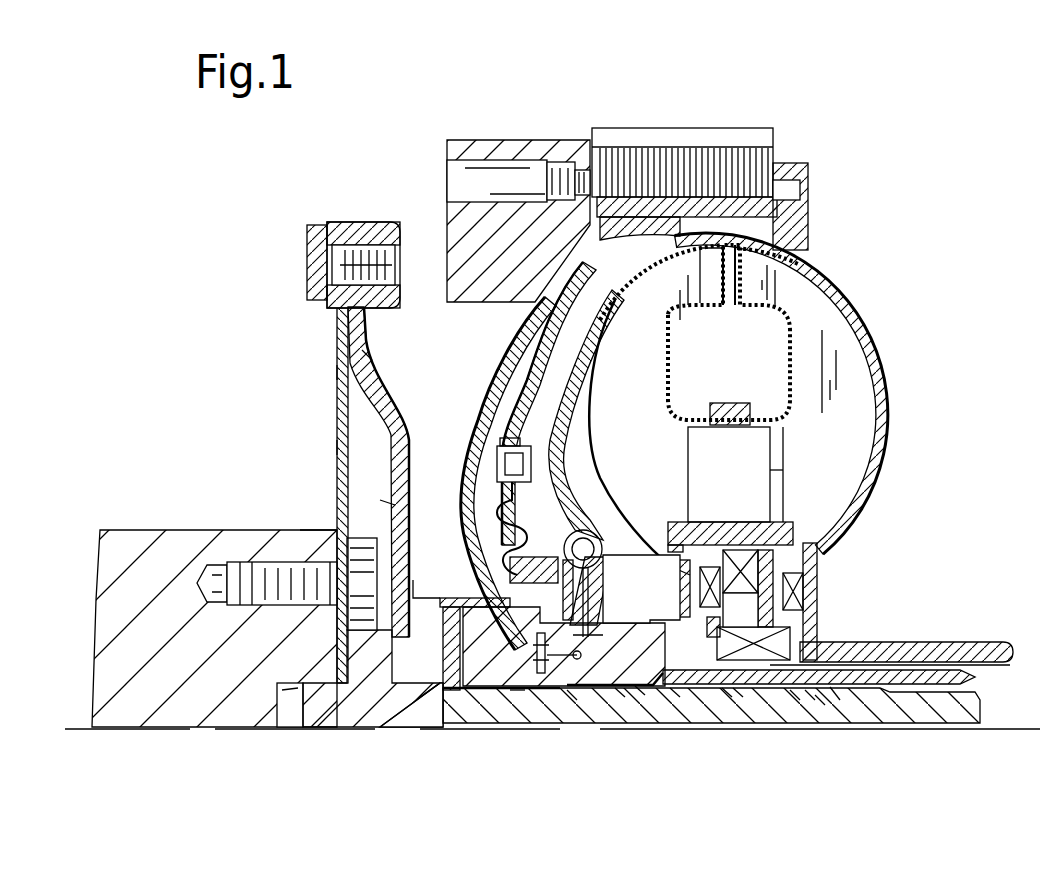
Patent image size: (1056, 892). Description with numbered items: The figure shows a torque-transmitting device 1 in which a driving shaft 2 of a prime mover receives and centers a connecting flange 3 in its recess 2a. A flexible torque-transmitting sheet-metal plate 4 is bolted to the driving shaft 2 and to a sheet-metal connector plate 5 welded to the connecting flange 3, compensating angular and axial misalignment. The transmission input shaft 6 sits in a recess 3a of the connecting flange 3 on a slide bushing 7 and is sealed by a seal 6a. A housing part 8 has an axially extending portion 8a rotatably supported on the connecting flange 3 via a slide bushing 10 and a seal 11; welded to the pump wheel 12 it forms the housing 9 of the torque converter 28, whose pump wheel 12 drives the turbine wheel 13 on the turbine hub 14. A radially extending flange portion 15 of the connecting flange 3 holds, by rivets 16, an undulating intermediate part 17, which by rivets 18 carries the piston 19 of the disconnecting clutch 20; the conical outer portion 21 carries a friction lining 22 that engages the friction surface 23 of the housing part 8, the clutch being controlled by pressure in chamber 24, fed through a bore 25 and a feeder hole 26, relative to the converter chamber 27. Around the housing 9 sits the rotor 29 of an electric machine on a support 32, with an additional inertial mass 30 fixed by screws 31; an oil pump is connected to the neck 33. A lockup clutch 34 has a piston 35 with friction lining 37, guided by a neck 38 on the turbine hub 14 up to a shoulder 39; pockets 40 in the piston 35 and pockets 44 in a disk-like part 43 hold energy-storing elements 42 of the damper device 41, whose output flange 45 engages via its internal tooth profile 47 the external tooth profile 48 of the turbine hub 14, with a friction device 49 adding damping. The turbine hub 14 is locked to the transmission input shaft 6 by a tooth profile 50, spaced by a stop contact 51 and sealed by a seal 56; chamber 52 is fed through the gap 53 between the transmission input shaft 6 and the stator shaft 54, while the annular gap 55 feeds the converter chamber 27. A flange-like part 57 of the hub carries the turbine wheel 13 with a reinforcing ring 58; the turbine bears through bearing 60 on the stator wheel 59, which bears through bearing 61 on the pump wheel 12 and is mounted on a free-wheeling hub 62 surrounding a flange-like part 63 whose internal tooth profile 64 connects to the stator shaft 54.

The torque-transmitting device 1 is at (957, 76).
The driving shaft 2 is at (133, 560).
The recess of the driving shaft 2a is at (200, 728).
The connecting flange 3 is at (377, 713).
The recess of the connecting flange 3a is at (443, 700).
The flexible torque-transmitting sheet-metal plate 4 is at (337, 393).
The sheet-metal connector plate 5 is at (337, 447).
The transmission input shaft 6 is at (573, 697).
The seal 6a is at (448, 693).
The slide bushing 7 is at (463, 700).
The housing part 8 is at (337, 295).
The axially extending portion 8a is at (337, 537).
The housing 9 is at (845, 270).
The slide bushing 10 is at (333, 697).
The seal 11 is at (290, 713).
The pump wheel 12 is at (840, 343).
The turbine wheel 13 is at (767, 237).
The turbine hub 14 is at (675, 692).
The radially extending flange portion 15 is at (490, 693).
The rivets 16 is at (407, 560).
The ring-shaped intermediate part 17 is at (388, 503).
The rivets 18 is at (337, 373).
The piston 19 is at (370, 355).
The disconnecting clutch 20 is at (485, 467).
The radially outer portion of the piston 21 is at (555, 290).
The friction lining 22 is at (337, 250).
The friction surface 23 is at (523, 293).
The chamber 24 is at (407, 450).
The bore 25 is at (795, 695).
The feeder hole 26 is at (410, 700).
The converter chamber 27 is at (652, 245).
The torque converter 28 is at (825, 242).
The rotor 29 is at (735, 165).
The additional inertial mass 30 is at (498, 220).
The screws 31 is at (565, 190).
The support 32 is at (783, 200).
The neck of the converter 33 is at (890, 648).
The lockup clutch 34 is at (486, 418).
The piston 35 is at (568, 360).
The friction lining 37 is at (622, 253).
The axially formed neck 38 is at (620, 693).
The radially stepped-up shoulder 39 is at (727, 692).
The pockets 40 is at (622, 568).
The damper device 41 is at (650, 560).
The energy-storing elements 42 is at (605, 555).
The ring-shaped disk-like part 43 is at (500, 470).
The pockets 44 is at (507, 547).
The flange 45 is at (563, 695).
The internal tooth profile 47 is at (580, 707).
The external tooth profile 48 is at (553, 680).
The friction device 49 is at (603, 588).
The tooth profile 50 is at (640, 690).
The stop contact 51 is at (517, 695).
The chamber 52 is at (530, 422).
The gap 53 is at (927, 700).
The stator shaft 54 is at (892, 727).
The annular gap 55 is at (950, 670).
The seal 56 is at (738, 692).
The flange-like part 57 is at (723, 572).
The reinforcing ring 58 is at (687, 520).
The stator wheel 59 is at (738, 503).
The bearing 60 is at (812, 695).
The bearing 61 is at (787, 583).
The free-wheeling hub 62 is at (750, 612).
The flange-like part 63 is at (833, 693).
The internal tooth profile 64 is at (820, 700).